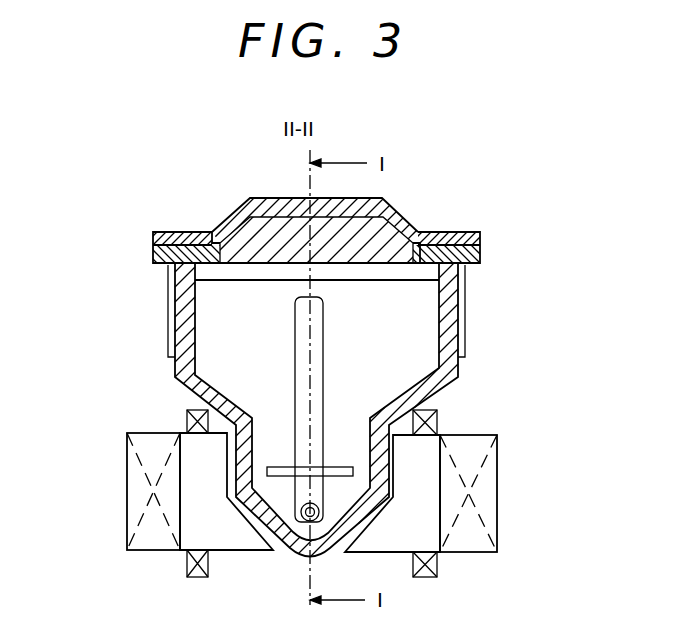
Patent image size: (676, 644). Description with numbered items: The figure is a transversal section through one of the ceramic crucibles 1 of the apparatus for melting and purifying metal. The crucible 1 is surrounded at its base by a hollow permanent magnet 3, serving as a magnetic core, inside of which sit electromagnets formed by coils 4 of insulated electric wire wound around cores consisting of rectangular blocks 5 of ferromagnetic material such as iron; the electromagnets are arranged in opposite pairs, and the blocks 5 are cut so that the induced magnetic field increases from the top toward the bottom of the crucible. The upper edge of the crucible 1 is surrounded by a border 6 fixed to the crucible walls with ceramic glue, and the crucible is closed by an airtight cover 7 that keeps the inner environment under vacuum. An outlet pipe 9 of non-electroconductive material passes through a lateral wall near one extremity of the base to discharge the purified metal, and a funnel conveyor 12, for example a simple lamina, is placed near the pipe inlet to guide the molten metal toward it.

The ceramic crucible 1 is at (183, 333).
The hollow permanent magnet 3 is at (128, 503).
The coil 4 is at (183, 577).
The rectangular block 5 is at (225, 527).
The border 6 is at (153, 260).
The cover 7 is at (226, 255).
The outlet pipe 9 is at (295, 363).
The funnel conveyor 12 is at (338, 462).